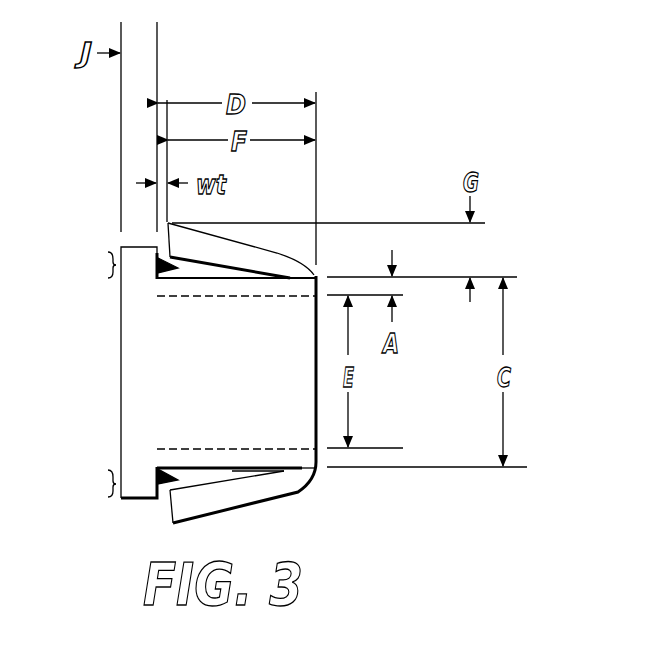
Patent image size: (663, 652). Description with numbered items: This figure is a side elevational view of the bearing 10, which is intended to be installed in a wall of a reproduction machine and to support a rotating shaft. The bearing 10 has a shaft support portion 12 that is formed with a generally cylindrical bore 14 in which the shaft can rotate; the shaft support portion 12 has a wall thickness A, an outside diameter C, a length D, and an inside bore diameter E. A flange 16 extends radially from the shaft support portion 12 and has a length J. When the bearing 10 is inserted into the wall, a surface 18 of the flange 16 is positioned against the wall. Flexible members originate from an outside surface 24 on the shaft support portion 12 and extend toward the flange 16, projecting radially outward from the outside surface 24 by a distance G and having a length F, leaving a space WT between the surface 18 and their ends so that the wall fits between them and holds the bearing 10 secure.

The bearing 10 is at (320, 496).
The shaft support portion 12 is at (312, 80).
The bore 14 is at (283, 398).
The flange 16 is at (100, 373).
The surface 18 is at (174, 267).
The outside surface 24 is at (232, 266).